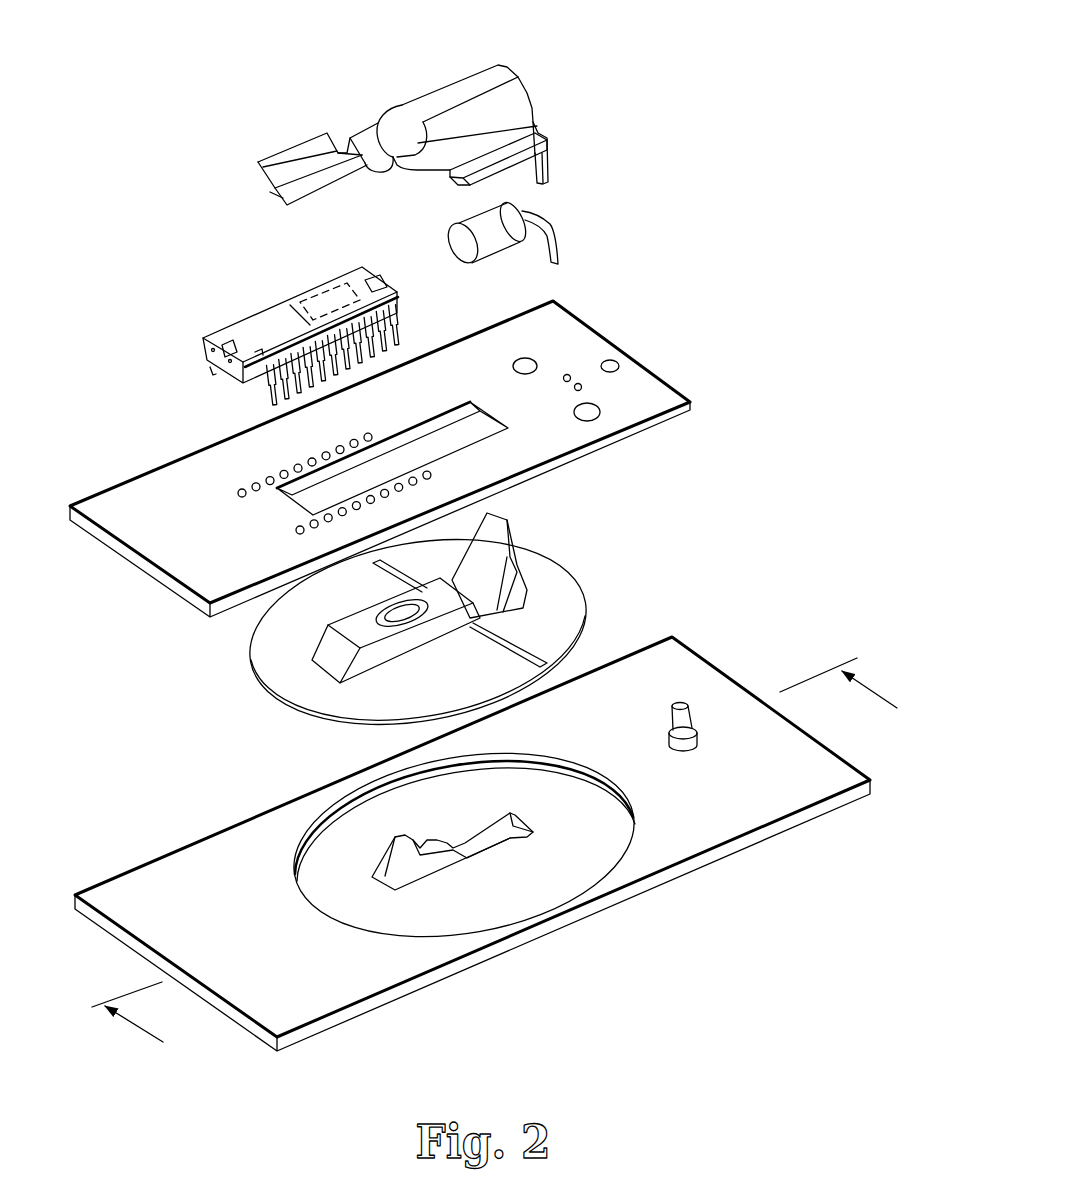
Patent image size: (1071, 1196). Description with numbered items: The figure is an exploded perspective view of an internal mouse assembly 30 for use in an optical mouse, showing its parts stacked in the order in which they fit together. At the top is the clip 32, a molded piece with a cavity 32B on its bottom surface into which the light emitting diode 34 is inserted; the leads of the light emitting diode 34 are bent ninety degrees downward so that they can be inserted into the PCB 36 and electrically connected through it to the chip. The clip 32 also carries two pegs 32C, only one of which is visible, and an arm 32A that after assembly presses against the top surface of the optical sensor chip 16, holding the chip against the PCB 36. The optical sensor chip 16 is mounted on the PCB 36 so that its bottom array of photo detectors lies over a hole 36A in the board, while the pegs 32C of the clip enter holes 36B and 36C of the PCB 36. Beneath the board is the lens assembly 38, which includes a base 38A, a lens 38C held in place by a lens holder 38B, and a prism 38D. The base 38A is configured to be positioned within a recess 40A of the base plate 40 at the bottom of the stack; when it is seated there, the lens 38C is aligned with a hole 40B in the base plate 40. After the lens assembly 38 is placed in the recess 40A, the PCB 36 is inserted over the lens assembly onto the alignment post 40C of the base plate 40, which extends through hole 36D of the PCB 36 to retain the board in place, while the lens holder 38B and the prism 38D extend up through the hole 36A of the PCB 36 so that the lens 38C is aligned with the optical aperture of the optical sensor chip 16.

The internal mouse assembly 30 is at (238, 88).
The clip 32 is at (554, 118).
The arm 32A is at (282, 184).
The cavity 32B is at (410, 187).
The pegs 32C is at (552, 182).
The light emitting diode 34 is at (558, 212).
The optical sensor chip 16 is at (406, 294).
The PCB 36 is at (720, 394).
The hole 36A is at (372, 483).
The hole 36B is at (533, 362).
The hole 36C is at (593, 414).
The hole 36D is at (617, 365).
The lens assembly 38 is at (588, 569).
The base 38A is at (341, 704).
The lens holder 38B is at (322, 662).
The lens 38C is at (378, 618).
The prism 38D is at (508, 558).
The base plate 40 is at (806, 843).
The recess 40A is at (433, 917).
The hole 40B is at (497, 843).
The alignment post 40C is at (686, 727).